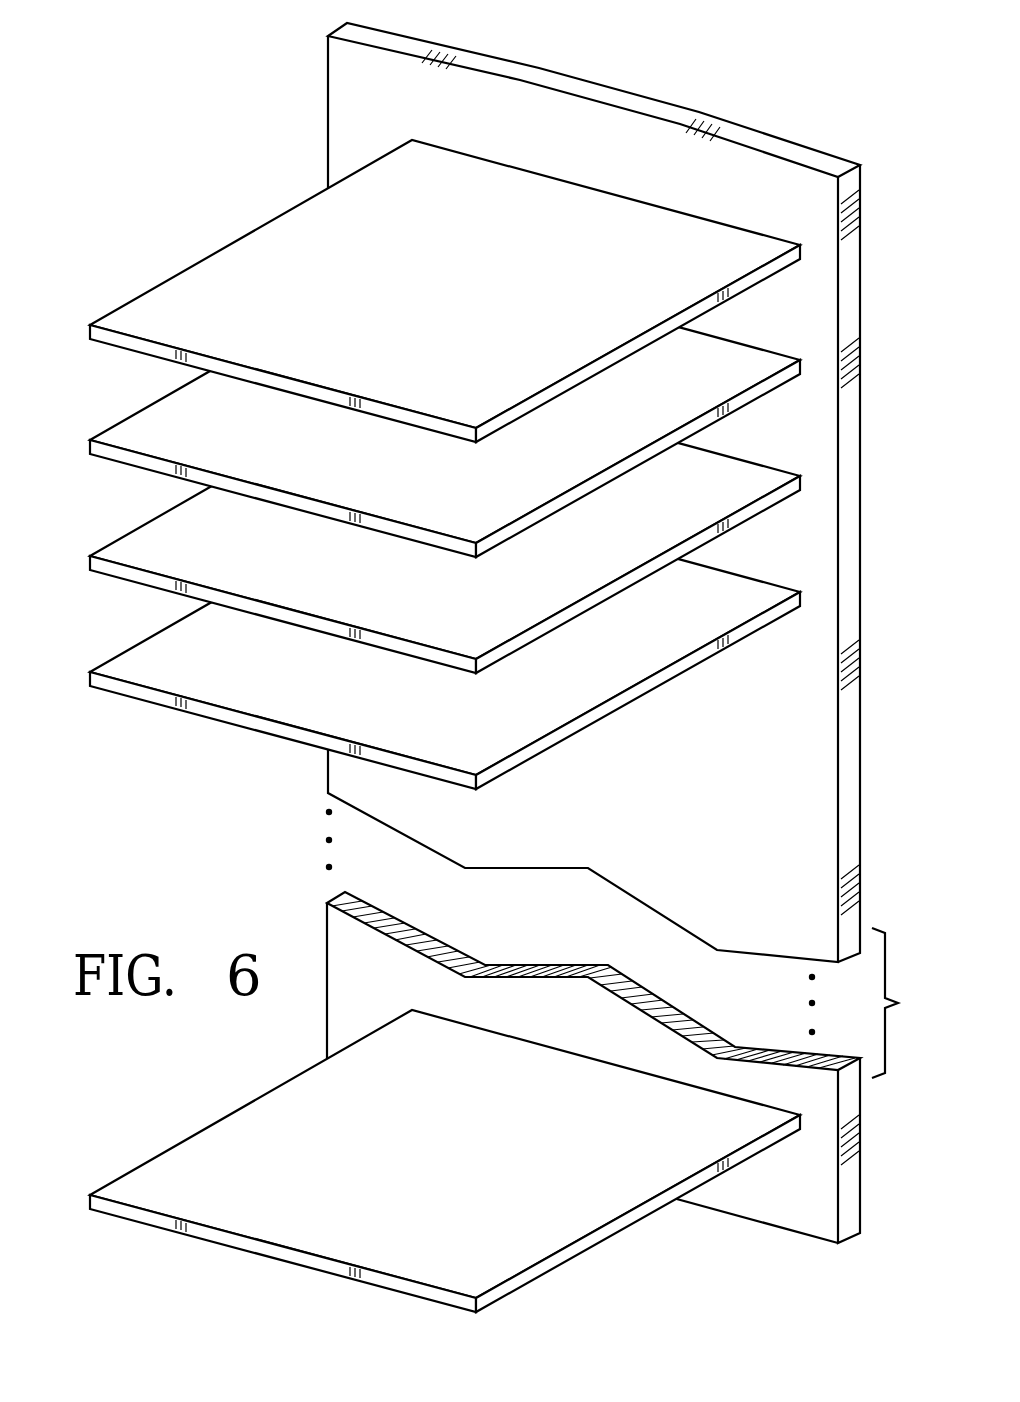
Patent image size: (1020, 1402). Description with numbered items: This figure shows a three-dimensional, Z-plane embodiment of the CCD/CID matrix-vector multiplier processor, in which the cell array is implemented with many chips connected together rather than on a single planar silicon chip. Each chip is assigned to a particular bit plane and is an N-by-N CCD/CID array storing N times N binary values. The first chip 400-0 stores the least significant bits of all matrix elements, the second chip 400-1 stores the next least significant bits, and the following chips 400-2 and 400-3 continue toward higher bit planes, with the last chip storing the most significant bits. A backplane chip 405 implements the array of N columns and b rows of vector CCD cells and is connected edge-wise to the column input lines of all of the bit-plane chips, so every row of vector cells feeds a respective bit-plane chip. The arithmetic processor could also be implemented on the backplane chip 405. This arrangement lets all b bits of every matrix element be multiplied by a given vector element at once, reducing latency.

The backplane chip 405 is at (806, 147).
The first chip 400-0 is at (500, 389).
The second chip 400-1 is at (500, 509).
The third chip 400-2 is at (500, 623).
The fourth chip 400-3 is at (500, 737).